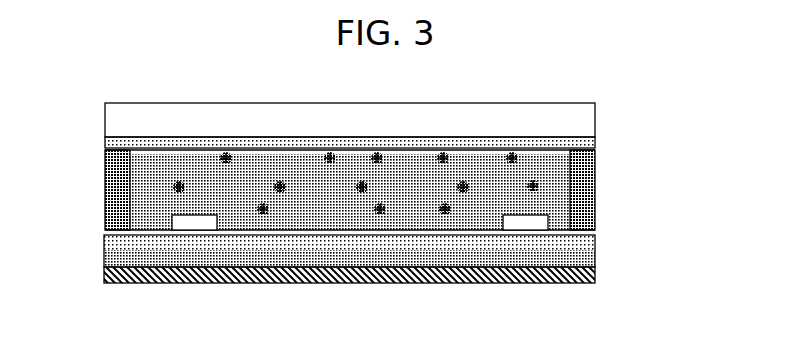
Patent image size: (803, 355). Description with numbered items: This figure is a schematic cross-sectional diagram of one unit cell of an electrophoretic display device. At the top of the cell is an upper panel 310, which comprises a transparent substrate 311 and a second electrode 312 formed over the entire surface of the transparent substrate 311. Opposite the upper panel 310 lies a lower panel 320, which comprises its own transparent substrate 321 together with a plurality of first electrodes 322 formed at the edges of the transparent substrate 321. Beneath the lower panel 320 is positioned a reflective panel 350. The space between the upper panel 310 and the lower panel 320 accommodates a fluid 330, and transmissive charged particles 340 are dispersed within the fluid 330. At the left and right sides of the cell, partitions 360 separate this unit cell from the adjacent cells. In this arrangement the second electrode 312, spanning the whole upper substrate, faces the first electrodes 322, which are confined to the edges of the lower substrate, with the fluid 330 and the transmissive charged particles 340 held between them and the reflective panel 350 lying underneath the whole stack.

The upper panel 310 is at (435, 132).
The transparent substrate 311 is at (588, 120).
The second electrode 312 is at (588, 146).
The lower panel 320 is at (393, 264).
The transparent substrate 321 is at (586, 252).
The first electrodes 322 is at (548, 221).
The fluid 330 is at (153, 173).
The transmissive charged particles 340 is at (538, 185).
The reflective panel 350 is at (580, 281).
The partitions 360 is at (120, 209).